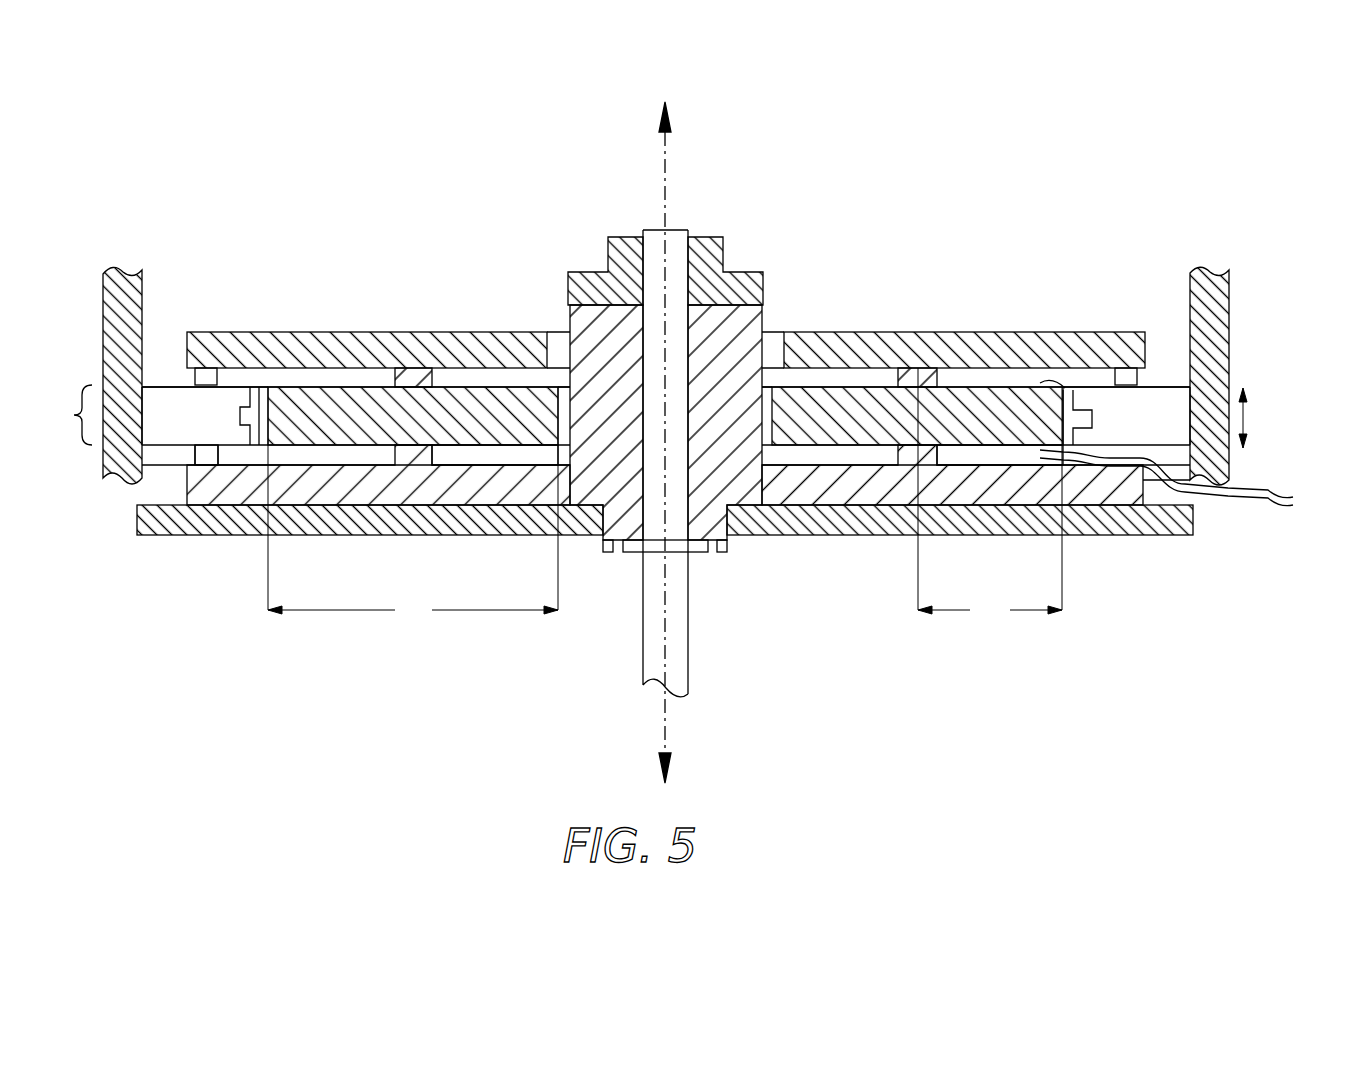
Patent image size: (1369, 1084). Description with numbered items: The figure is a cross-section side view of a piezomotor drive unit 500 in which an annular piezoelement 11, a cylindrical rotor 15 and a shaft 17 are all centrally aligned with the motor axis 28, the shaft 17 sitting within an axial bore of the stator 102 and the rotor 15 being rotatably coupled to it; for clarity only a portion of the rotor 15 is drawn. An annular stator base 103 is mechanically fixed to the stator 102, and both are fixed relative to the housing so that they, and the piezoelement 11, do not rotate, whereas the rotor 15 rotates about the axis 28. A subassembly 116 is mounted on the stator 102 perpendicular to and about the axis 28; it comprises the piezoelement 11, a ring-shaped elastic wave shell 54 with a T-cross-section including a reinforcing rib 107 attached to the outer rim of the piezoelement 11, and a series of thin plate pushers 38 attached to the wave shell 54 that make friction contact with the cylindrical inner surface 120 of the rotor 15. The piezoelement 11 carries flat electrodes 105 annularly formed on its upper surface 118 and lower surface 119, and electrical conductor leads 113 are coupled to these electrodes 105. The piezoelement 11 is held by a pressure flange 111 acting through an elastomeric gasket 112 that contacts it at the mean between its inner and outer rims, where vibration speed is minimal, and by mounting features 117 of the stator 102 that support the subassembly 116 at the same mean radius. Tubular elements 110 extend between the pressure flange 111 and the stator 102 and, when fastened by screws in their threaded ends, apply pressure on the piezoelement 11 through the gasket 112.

The piezomotor drive unit 500 is at (696, 442).
The motor axis 28 is at (668, 166).
The shaft 17 is at (655, 578).
The flat electrodes 105 is at (533, 387).
The cylindrical rotor 15 is at (103, 294).
The cylindrical inner surface 120 is at (142, 322).
The gasket 112 is at (397, 380).
The upper surface 118 is at (457, 387).
The annular piezoelement 11 is at (355, 400).
The pressure flange 111 is at (815, 355).
The wave shell 54 is at (248, 398).
The reinforcing rib 107 is at (1092, 418).
The mounting features 117 is at (413, 450).
The lower surface 119 is at (520, 445).
The stator 102 is at (262, 505).
The stator base 103 is at (1140, 525).
The tubular elements 110 is at (195, 455).
The pushers 38 is at (170, 431).
The subassembly 116 is at (60, 415).
The electrical conductor leads 113 is at (1275, 484).